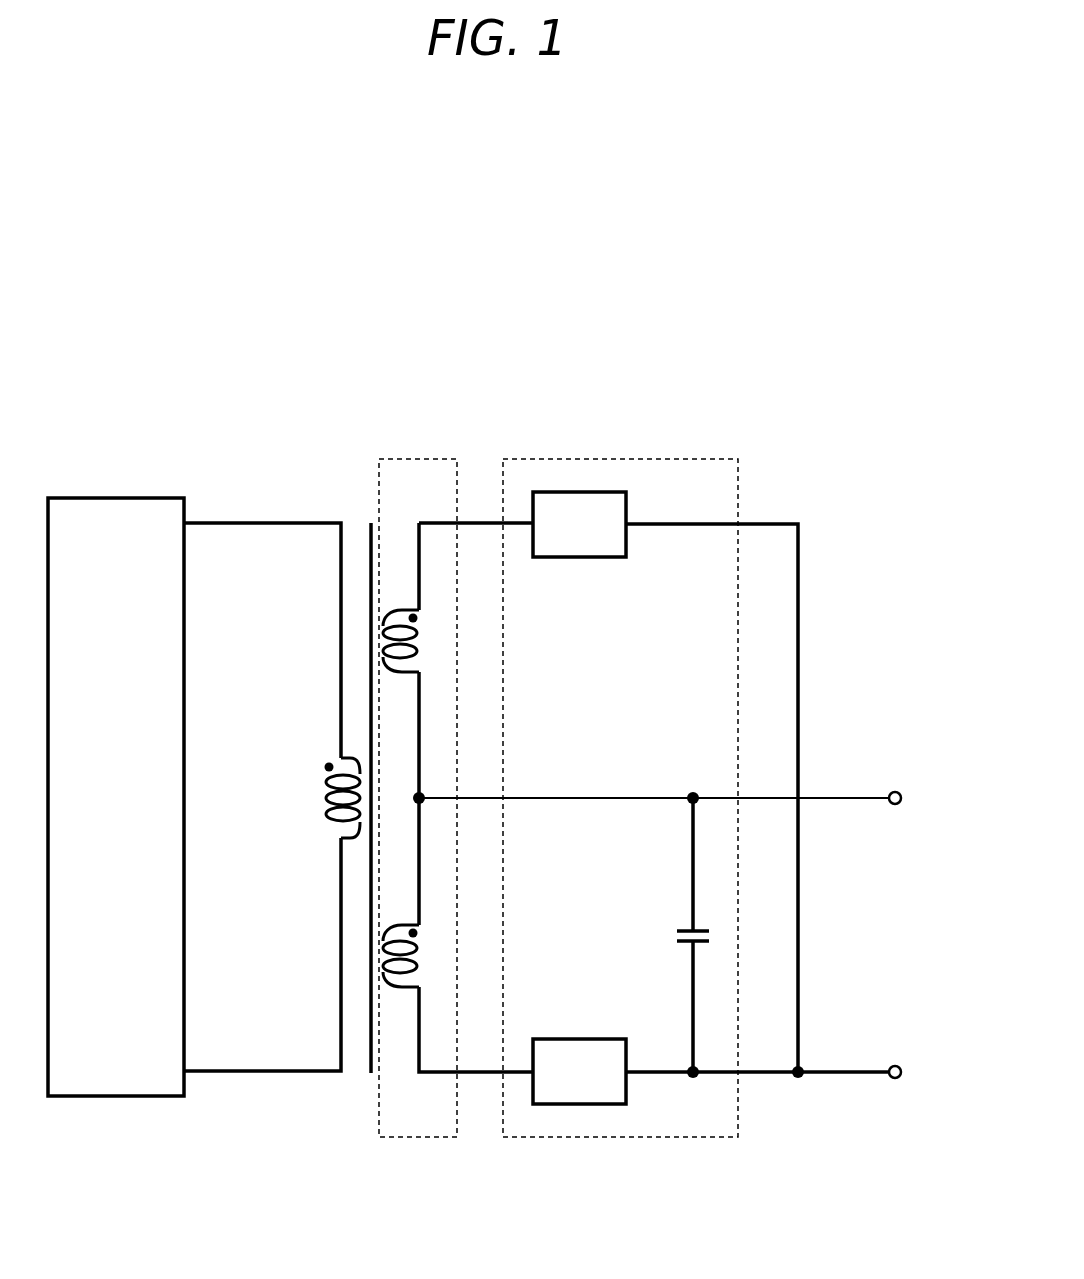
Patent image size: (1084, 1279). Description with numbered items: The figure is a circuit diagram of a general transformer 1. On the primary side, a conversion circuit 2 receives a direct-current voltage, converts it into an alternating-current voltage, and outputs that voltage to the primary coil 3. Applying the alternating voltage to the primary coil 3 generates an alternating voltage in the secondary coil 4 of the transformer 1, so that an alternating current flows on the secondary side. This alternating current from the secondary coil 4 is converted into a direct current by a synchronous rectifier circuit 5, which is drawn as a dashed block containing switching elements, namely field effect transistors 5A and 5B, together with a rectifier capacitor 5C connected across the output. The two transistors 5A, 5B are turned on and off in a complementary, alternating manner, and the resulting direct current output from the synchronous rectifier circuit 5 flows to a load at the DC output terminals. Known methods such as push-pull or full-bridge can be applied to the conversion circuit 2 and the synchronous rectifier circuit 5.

The transformer 1 is at (422, 252).
The conversion circuit 2 is at (116, 497).
The primary coil 3 is at (312, 800).
The secondary coil 4 is at (418, 458).
The synchronous rectifier circuit 5 is at (620, 458).
The field effect transistor 5A is at (580, 558).
The field effect transistor 5B is at (580, 1038).
The rectifier capacitor 5C is at (676, 934).